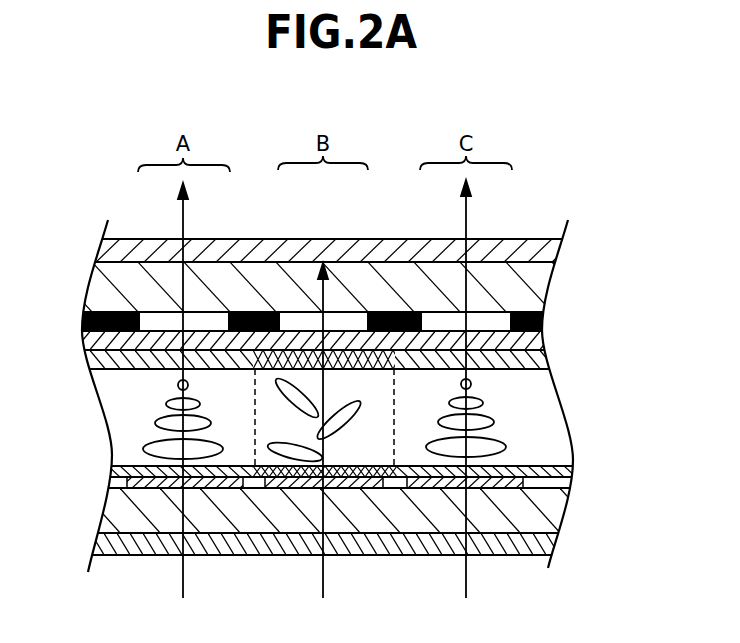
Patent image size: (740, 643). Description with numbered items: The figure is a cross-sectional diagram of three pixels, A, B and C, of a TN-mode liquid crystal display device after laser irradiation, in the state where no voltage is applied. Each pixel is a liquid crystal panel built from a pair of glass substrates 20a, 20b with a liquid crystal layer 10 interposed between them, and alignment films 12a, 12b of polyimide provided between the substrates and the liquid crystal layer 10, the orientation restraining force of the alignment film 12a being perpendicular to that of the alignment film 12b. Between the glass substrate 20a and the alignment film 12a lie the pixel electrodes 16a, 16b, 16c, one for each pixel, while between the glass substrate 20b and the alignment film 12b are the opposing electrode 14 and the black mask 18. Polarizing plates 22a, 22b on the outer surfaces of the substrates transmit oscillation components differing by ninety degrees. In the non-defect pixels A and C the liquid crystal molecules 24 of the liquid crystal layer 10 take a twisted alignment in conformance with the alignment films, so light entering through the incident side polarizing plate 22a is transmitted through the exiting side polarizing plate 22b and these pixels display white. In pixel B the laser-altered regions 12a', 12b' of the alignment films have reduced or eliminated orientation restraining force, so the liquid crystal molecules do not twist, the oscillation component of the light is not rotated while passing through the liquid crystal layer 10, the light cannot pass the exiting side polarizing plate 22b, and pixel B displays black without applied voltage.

The polarizing plate 22b is at (536, 248).
The glass substrate 20b is at (535, 288).
The black mask 18 is at (543, 317).
The opposing electrode 14 is at (540, 343).
The alignment film 12b is at (356, 366).
The property-changed region of alignment film 12b' is at (331, 283).
The liquid crystal layer 10 is at (537, 417).
The liquid crystal molecules 24 is at (150, 449).
The alignment film 12a is at (355, 480).
The property-changed region of alignment film 12a' is at (329, 549).
The pixel electrode 16a is at (150, 489).
The pixel electrode 16b is at (289, 489).
The pixel electrode 16c is at (428, 489).
The glass substrate 20a is at (537, 507).
The polarizing plate 22a is at (543, 543).